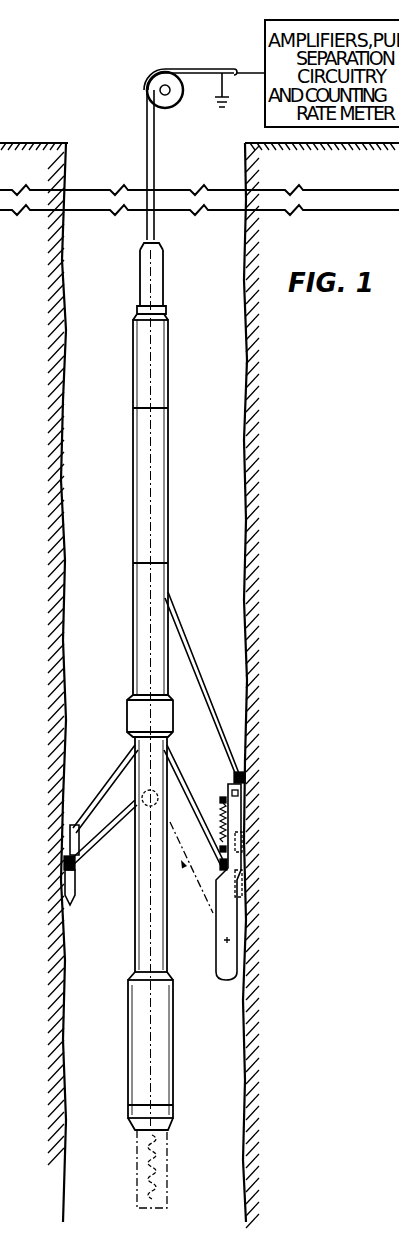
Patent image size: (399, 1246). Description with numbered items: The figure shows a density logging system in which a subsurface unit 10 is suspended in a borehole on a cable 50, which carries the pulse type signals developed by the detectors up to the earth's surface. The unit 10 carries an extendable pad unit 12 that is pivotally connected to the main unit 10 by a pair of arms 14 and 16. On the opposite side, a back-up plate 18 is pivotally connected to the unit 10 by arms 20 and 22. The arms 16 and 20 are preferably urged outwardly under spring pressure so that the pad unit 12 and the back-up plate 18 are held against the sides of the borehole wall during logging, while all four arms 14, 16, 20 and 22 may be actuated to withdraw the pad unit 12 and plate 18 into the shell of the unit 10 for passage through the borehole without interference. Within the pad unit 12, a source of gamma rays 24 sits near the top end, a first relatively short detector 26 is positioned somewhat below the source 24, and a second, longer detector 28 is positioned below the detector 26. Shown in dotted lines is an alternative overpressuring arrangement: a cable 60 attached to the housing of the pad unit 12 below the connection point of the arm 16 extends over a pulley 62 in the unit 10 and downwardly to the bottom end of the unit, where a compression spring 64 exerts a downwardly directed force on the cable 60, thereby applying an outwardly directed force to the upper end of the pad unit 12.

The subsurface unit 10 is at (172, 497).
The extendable pad unit 12 is at (243, 945).
The arm 14 is at (188, 634).
The arm 16 is at (181, 776).
The back-up plate 18 is at (78, 893).
The arm 20 is at (84, 845).
The arm 22 is at (98, 808).
The source of gamma rays 24 is at (246, 791).
The first relatively short detector 26 is at (249, 835).
The second, longer detector 28 is at (245, 881).
The cable 50 is at (156, 226).
The cable 60 is at (206, 895).
The pulley 62 is at (142, 805).
The compression spring 64 is at (163, 1180).